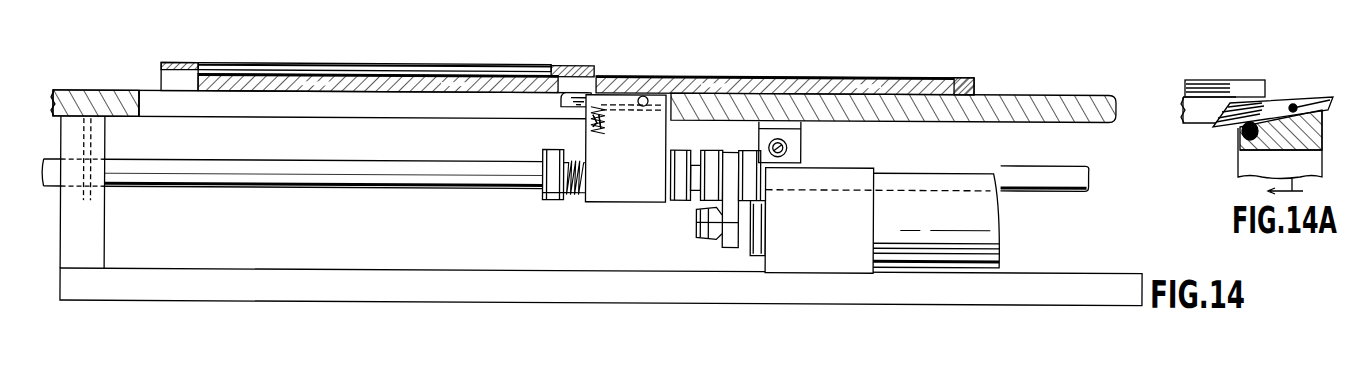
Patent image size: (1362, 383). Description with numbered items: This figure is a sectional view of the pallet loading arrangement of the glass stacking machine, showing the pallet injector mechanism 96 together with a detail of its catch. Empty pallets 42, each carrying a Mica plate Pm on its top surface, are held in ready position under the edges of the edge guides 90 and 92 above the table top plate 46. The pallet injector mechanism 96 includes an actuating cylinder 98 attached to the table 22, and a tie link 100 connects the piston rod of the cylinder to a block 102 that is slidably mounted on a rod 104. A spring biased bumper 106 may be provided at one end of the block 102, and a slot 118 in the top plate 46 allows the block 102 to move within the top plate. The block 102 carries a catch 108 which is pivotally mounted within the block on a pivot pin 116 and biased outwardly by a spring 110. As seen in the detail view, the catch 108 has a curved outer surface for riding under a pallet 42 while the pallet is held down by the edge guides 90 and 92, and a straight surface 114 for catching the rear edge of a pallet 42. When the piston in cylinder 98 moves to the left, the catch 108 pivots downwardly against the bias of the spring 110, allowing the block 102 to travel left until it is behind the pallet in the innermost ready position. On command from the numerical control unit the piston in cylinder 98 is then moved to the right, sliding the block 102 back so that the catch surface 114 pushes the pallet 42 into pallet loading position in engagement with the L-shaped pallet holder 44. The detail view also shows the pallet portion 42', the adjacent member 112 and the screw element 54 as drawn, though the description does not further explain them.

In FIG. 14, the table 22 is at (361, 259).
In FIG. 14, the pallet 42 is at (378, 63).
In FIG. 14A, the strip portion 42' is at (1227, 62).
In FIG. 14, the pallet holder 44 is at (963, 73).
In FIG. 14, the top plate 46 is at (104, 89).
In FIG. 14, the screw bracket 54 is at (789, 146).
In FIG. 14, the edge guide 90 is at (185, 62).
In FIG. 14, the edge guide 92 is at (556, 63).
In FIG. 14, the pallet injector mechanism 96 is at (624, 48).
In FIG. 14, the actuating cylinder 98 is at (993, 234).
In FIG. 14, the tie link 100 is at (712, 242).
In FIG. 14, the block 102 is at (617, 199).
In FIG. 14A, the block 102 is at (1240, 170).
In FIG. 14, the rod 104 is at (383, 158).
In FIG. 14, the spring biased bumper 106 is at (548, 150).
In FIG. 14, the catch 108 is at (592, 75).
In FIG. 14, the spring 110 is at (607, 120).
In FIG. 14A, the spring 110 is at (1241, 135).
In FIG. 14A, the left member 112 is at (1226, 96).
In FIG. 14A, the straight surface 114 is at (1255, 100).
In FIG. 14A, the pivot pin 116 is at (1295, 105).
In FIG. 14, the slot 118 is at (158, 100).
In FIG. 14, the Mica plate Pm is at (365, 73).